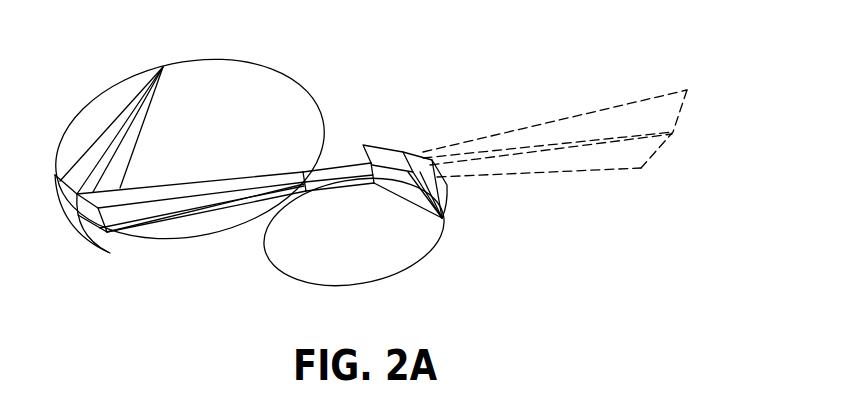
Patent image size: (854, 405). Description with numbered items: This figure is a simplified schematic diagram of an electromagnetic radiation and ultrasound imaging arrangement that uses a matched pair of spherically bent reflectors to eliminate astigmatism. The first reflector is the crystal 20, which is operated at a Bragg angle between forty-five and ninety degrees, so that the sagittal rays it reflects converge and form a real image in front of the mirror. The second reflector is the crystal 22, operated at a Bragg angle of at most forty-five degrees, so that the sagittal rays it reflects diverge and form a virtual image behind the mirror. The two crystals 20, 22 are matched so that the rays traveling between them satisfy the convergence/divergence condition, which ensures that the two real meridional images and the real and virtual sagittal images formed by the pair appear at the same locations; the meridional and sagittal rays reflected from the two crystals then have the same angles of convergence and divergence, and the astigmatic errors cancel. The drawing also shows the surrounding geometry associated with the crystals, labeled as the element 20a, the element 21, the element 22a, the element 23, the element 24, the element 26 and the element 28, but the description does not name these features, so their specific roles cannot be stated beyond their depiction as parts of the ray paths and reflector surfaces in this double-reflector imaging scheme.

The crystal 20 is at (56, 223).
The inner rim surface 20a is at (80, 213).
The first disc 21 is at (247, 58).
The crystal 22 is at (382, 152).
The plate lip 22a is at (422, 158).
The second disc 23 is at (400, 272).
The fin 24 is at (110, 133).
The bar 26 is at (98, 167).
The projected frustum 28 is at (593, 125).